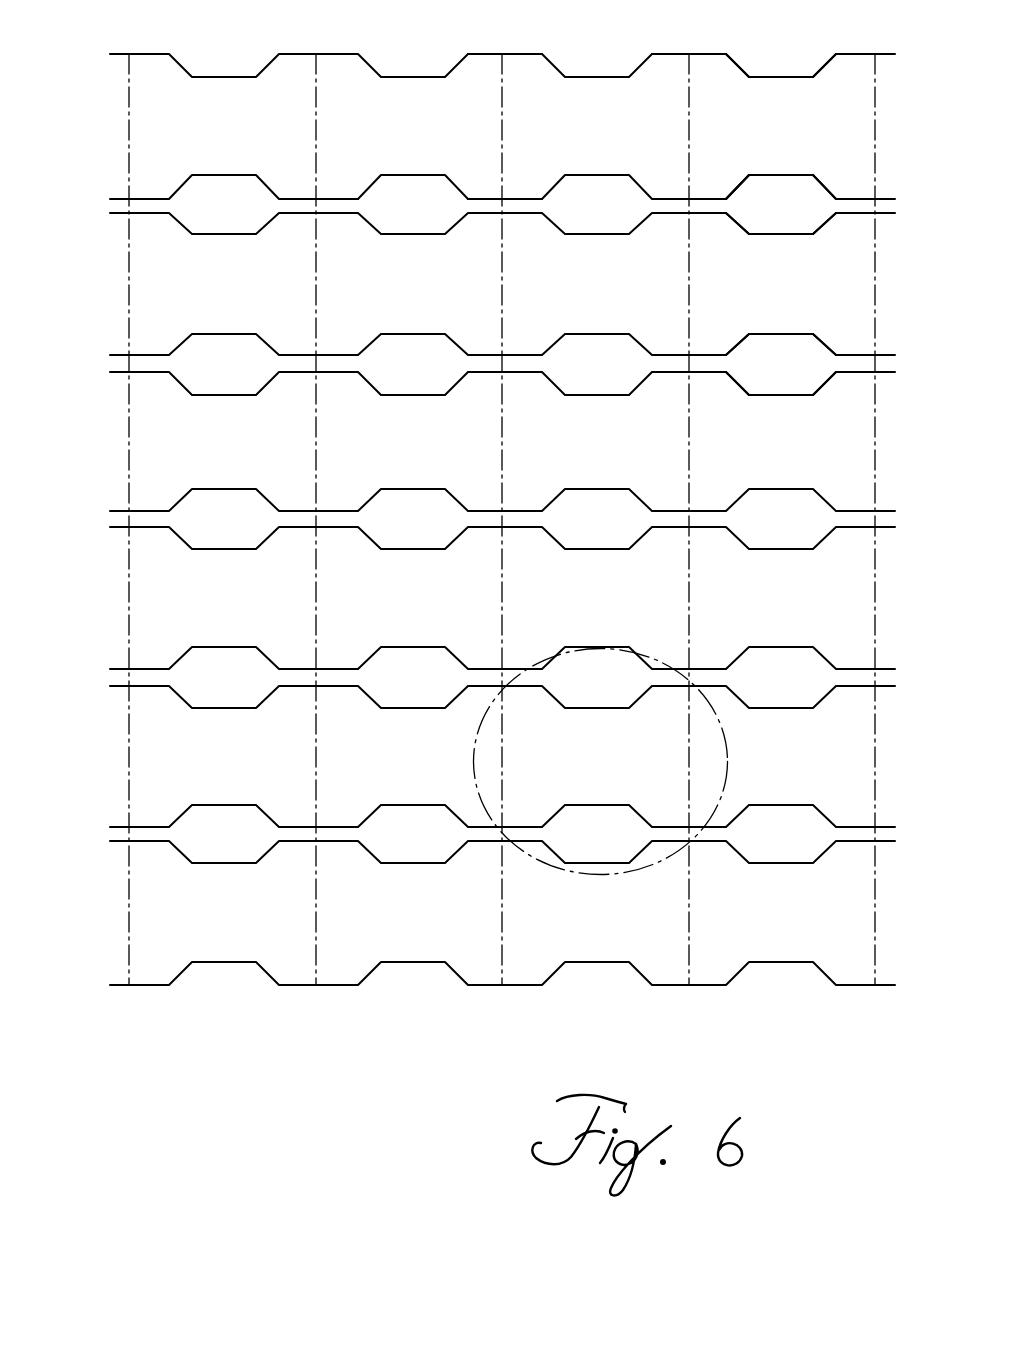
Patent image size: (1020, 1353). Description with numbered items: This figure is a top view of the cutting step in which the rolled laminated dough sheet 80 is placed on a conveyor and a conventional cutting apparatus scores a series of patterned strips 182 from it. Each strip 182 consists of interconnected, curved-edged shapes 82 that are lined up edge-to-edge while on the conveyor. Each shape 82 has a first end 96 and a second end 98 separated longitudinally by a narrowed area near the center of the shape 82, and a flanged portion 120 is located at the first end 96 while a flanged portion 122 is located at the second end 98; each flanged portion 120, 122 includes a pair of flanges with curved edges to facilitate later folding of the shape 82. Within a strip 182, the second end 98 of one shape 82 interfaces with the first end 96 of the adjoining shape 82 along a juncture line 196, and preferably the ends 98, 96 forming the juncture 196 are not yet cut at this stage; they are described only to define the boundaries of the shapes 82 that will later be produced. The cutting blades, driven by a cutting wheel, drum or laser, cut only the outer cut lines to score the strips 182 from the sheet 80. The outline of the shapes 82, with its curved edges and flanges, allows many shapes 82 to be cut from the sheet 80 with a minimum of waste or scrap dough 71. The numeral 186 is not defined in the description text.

The patterned strip 182 is at (85, 142).
The curved-edged shape 82 is at (478, 64).
The laminated dough sheet 80 is at (720, 70).
The inclined wall 186 is at (812, 80).
The waste or scrap dough 71 is at (796, 223).
The first end 96 is at (318, 111).
The second end 98 is at (503, 110).
The juncture line 196 is at (504, 97).
The flanged portion 120 is at (380, 170).
The flanged portion 122 is at (488, 178).